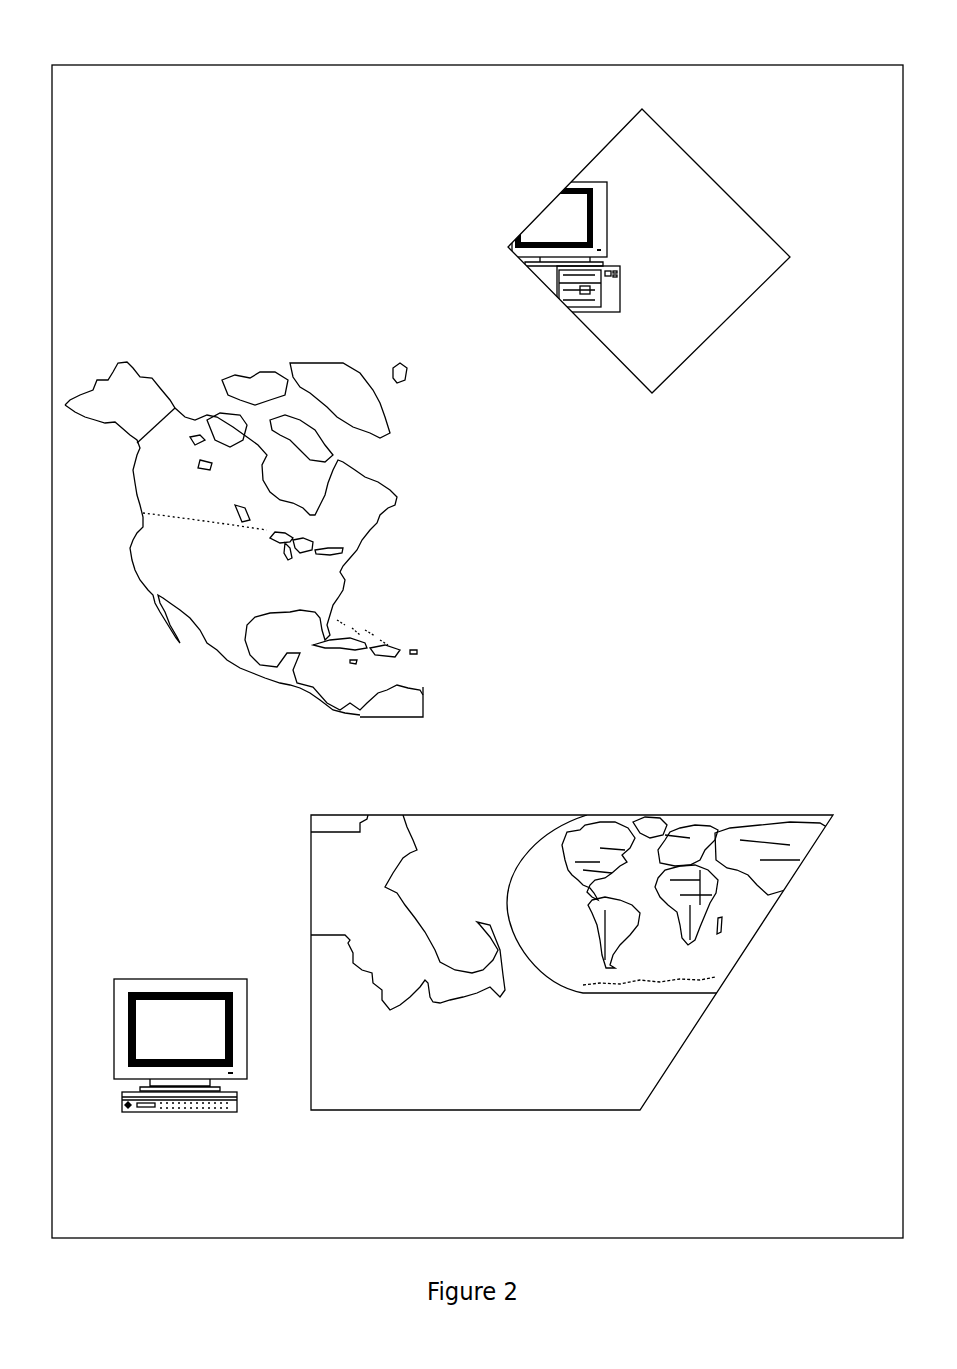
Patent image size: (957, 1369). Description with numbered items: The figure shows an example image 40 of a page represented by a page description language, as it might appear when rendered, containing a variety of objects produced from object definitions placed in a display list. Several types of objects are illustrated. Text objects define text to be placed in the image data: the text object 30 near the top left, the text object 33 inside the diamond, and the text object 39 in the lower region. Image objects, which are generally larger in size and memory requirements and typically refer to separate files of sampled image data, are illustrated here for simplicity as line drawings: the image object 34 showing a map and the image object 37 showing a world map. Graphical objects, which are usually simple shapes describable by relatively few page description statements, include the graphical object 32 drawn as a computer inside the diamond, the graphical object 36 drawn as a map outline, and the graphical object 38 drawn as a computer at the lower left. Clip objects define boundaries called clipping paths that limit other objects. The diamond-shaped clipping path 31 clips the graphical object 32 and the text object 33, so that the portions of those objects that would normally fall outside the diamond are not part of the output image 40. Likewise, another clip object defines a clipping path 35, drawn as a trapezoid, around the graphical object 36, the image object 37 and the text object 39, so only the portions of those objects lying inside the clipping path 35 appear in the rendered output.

The text object 30 is at (99, 150).
The diamond-shaped clipping path 31 is at (589, 151).
The graphical object 32 is at (614, 326).
The text object 33 is at (650, 165).
The image object 34 is at (364, 556).
The clipping path 35 is at (456, 809).
The graphical object 36 is at (416, 859).
The image object 37 is at (503, 880).
The graphical object 38 is at (254, 1013).
The text object 39 is at (403, 1066).
The image 40 is at (337, 62).